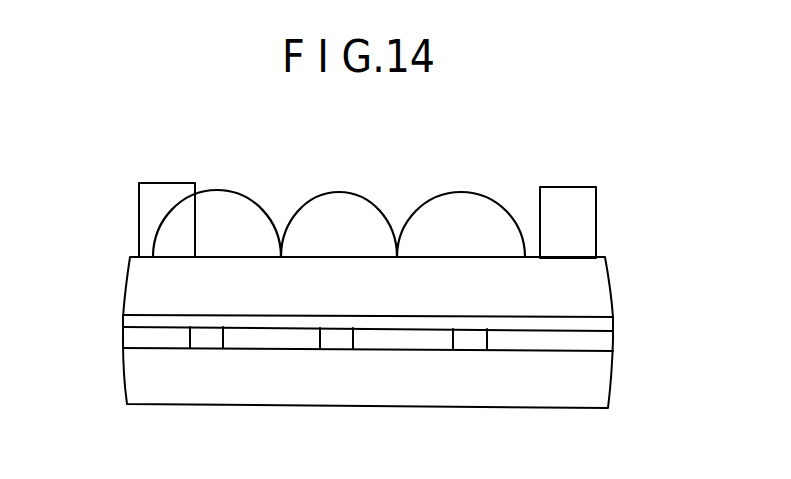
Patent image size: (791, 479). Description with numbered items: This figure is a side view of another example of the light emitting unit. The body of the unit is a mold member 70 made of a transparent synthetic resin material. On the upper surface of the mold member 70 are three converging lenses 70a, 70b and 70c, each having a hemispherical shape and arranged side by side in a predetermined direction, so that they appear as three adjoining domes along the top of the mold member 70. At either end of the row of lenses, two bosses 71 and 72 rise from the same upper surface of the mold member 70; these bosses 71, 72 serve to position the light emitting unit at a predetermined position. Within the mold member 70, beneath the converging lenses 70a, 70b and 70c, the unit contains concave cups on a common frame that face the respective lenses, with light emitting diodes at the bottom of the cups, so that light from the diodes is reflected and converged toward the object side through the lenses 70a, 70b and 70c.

The mold member 70 is at (275, 387).
The converging lens 70a is at (245, 207).
The converging lens 70b is at (340, 208).
The converging lens 70c is at (455, 205).
The boss 71 is at (162, 183).
The boss 72 is at (567, 187).